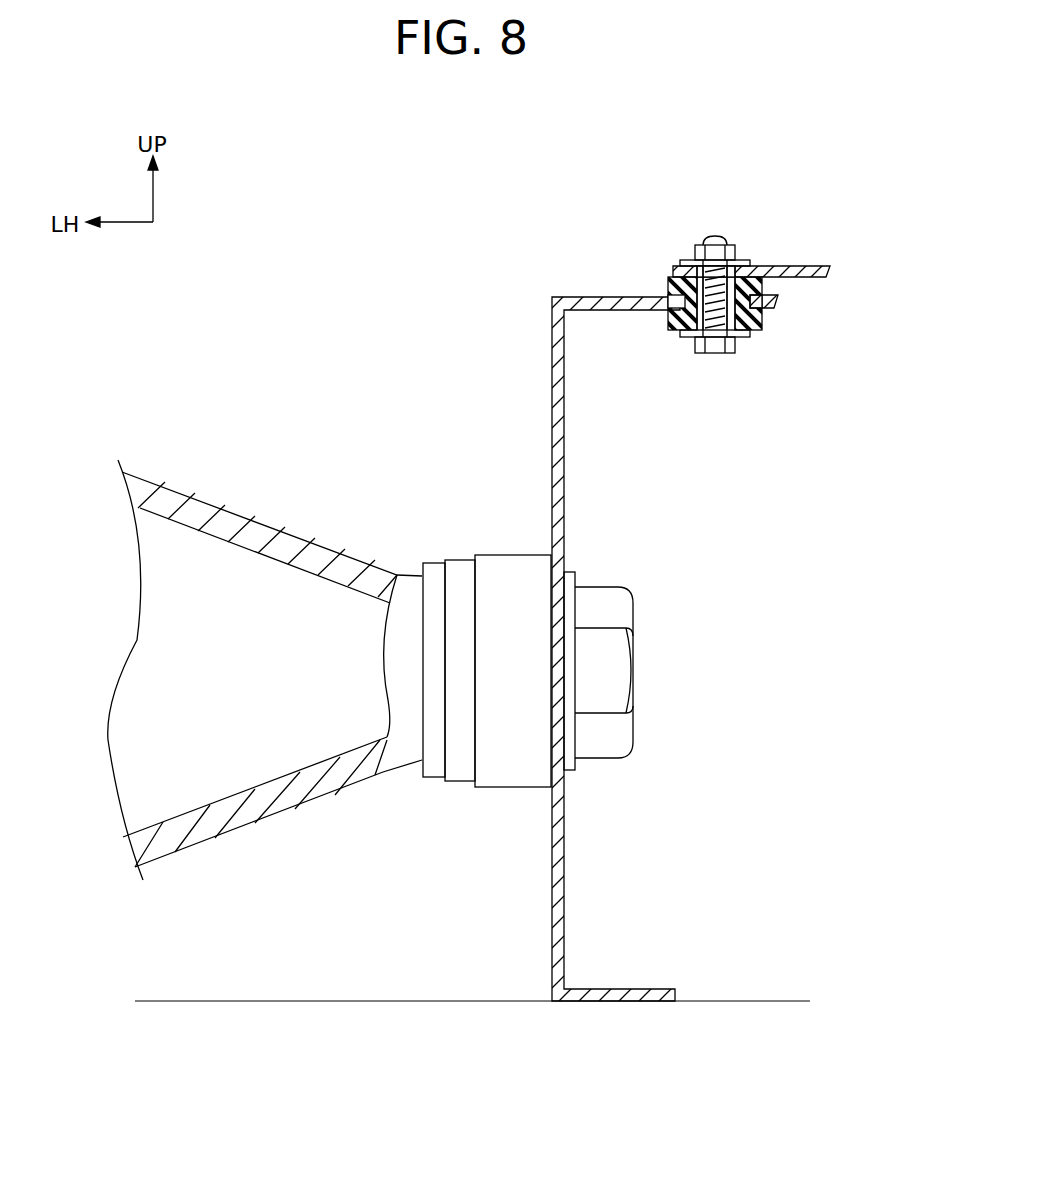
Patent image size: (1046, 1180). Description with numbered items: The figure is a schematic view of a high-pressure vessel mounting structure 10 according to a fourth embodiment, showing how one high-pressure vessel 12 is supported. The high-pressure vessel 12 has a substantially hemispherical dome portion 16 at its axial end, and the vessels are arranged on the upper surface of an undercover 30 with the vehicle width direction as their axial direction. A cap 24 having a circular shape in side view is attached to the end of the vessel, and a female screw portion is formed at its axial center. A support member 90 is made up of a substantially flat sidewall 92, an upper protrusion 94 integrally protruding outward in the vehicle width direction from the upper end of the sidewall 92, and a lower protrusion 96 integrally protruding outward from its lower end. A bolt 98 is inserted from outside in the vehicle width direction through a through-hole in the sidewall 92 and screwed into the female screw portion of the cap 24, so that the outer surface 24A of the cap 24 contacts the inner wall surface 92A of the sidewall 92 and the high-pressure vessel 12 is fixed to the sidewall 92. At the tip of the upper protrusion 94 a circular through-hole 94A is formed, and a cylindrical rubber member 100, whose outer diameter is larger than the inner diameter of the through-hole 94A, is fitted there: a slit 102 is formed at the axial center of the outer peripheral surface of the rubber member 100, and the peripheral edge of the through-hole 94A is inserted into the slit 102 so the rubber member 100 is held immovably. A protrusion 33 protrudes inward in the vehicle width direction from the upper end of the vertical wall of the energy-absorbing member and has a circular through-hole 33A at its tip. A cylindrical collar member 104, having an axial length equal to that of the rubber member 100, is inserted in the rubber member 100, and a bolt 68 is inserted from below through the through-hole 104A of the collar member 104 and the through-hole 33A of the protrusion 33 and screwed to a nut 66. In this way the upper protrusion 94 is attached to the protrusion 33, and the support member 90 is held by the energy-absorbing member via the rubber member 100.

The high-pressure vessel mounting structure 10 is at (492, 572).
The high-pressure vessel 12 is at (265, 643).
The dome portion 16 is at (285, 523).
The cap 24 is at (549, 646).
The outer surface 24A is at (567, 792).
The undercover 30 is at (742, 1000).
The protrusion 33 is at (765, 244).
The through-hole 33A is at (721, 276).
The nut 66 is at (731, 243).
The bolt 68 is at (713, 355).
The support member 90 is at (546, 601).
The sidewall 92 is at (565, 491).
The inner wall surface 92A is at (553, 890).
The upper protrusion 94 is at (612, 297).
The through-hole 94A is at (753, 332).
The lower protrusion 96 is at (636, 988).
The bolt 98 is at (612, 667).
The rubber member 100 is at (715, 359).
The slit 102 is at (775, 294).
The collar member 104 is at (699, 351).
The through-hole 104A is at (751, 262).